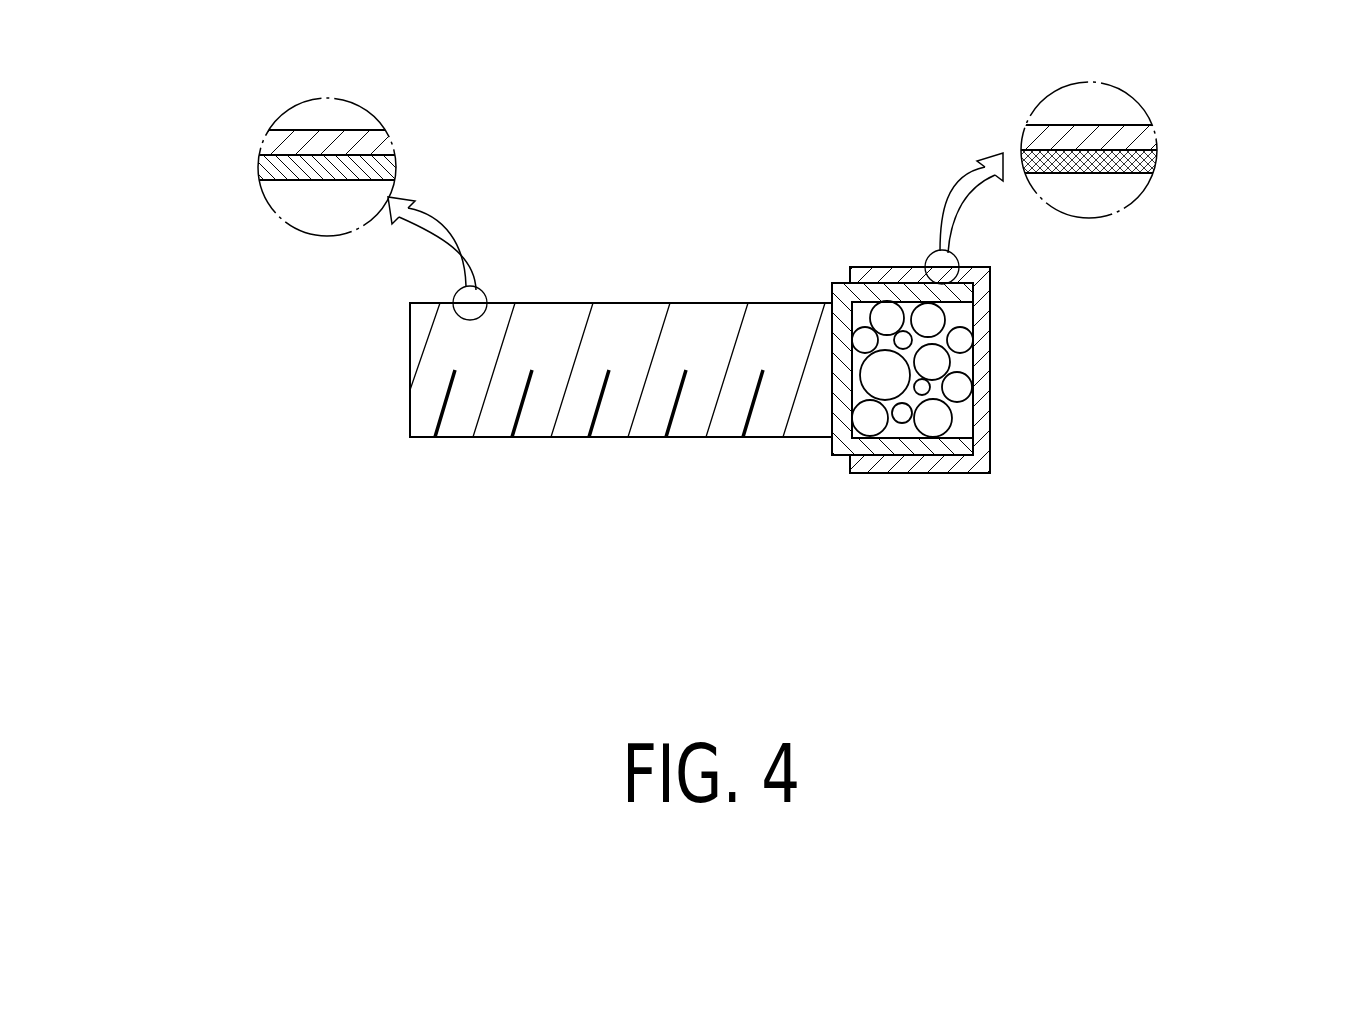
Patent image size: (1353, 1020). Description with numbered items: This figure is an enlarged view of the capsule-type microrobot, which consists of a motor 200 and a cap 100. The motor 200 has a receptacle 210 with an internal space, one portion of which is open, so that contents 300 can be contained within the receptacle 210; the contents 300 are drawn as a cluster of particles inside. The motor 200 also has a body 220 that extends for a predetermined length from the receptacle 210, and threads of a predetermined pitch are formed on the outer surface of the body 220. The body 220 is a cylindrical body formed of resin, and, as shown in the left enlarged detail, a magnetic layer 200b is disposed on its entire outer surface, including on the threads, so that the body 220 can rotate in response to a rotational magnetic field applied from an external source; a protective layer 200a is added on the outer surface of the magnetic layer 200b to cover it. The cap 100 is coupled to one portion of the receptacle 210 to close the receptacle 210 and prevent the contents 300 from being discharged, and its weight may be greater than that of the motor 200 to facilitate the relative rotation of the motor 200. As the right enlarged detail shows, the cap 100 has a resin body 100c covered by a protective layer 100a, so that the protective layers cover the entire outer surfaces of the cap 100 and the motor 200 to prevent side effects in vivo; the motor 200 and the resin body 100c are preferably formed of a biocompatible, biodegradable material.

The cap 100 is at (867, 267).
The protective layer 100a is at (1148, 138).
The resin body 100c is at (1150, 162).
The motor 200 is at (554, 437).
The protective layer 200a is at (272, 142).
The magnetic layer 200b is at (268, 167).
The receptacle 210 is at (897, 445).
The body 220 is at (483, 397).
The contents 300 is at (967, 338).